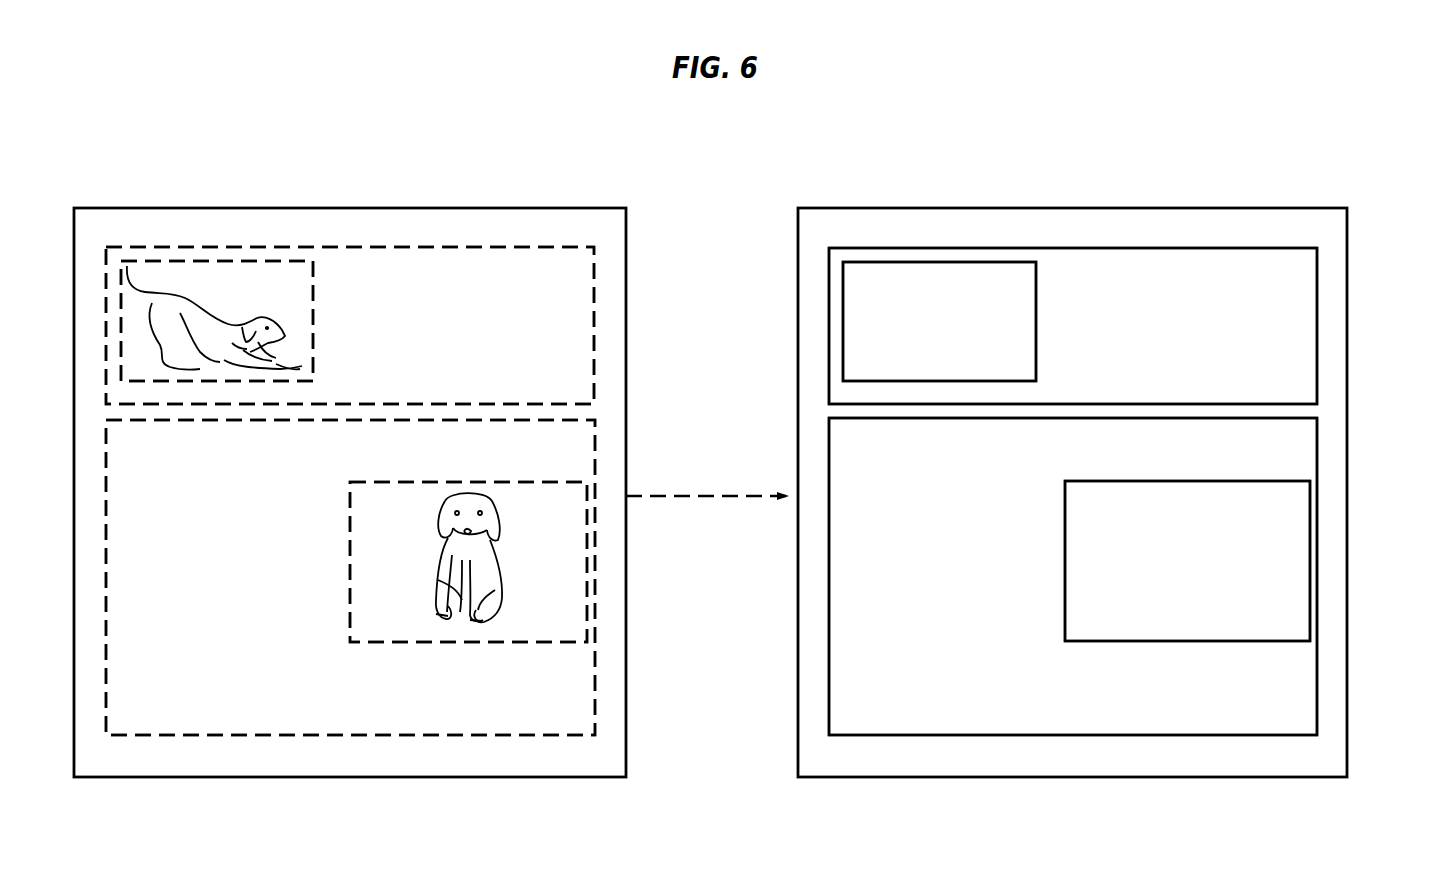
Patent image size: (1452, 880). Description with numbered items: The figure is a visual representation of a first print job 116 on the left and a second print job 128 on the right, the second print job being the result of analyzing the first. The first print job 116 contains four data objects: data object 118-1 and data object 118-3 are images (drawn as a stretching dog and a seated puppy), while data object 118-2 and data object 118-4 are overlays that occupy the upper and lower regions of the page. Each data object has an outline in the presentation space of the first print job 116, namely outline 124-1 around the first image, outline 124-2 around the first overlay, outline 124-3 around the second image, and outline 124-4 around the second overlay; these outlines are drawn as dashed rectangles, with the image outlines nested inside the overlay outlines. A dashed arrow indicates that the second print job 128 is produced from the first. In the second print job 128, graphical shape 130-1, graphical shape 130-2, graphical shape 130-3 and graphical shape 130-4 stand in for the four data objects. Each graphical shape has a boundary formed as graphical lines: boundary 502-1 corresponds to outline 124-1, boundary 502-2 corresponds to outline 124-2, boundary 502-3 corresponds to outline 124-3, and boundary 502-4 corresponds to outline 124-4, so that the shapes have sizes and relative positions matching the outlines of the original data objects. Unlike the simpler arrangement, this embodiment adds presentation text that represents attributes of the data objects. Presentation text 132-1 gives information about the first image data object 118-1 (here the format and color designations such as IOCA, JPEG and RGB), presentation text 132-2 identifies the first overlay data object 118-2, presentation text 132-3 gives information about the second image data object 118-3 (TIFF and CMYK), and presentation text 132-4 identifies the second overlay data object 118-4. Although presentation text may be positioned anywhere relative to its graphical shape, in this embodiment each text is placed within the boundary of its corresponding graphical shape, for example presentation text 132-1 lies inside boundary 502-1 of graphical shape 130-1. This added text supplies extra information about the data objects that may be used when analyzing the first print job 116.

The first print job 116 is at (352, 207).
The data object 118-1 is at (328, 308).
The data object 118-2 is at (570, 238).
The data object 118-3 is at (329, 527).
The data object 118-4 is at (522, 744).
The outline 124-1 is at (314, 357).
The outline 124-2 is at (488, 249).
The outline 124-3 is at (443, 644).
The outline 124-4 is at (283, 734).
The second print job 128 is at (1075, 207).
The graphical shape 130-1 is at (1052, 338).
The graphical shape 130-2 is at (1326, 289).
The graphical shape 130-3 is at (1060, 523).
The graphical shape 130-4 is at (1168, 742).
The presentation text 132-1 is at (916, 310).
The presentation text 132-2 is at (1292, 365).
The presentation text 132-3 is at (1150, 524).
The presentation text 132-4 is at (890, 672).
The boundary 502-1 is at (1038, 278).
The boundary 502-2 is at (1230, 250).
The boundary 502-3 is at (1141, 643).
The boundary 502-4 is at (1048, 733).